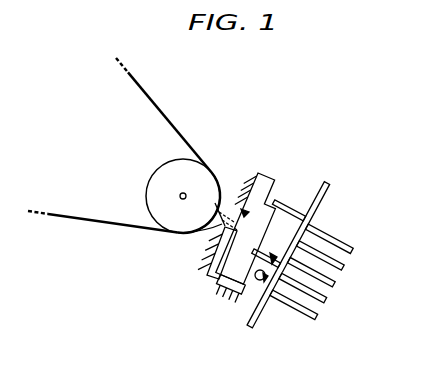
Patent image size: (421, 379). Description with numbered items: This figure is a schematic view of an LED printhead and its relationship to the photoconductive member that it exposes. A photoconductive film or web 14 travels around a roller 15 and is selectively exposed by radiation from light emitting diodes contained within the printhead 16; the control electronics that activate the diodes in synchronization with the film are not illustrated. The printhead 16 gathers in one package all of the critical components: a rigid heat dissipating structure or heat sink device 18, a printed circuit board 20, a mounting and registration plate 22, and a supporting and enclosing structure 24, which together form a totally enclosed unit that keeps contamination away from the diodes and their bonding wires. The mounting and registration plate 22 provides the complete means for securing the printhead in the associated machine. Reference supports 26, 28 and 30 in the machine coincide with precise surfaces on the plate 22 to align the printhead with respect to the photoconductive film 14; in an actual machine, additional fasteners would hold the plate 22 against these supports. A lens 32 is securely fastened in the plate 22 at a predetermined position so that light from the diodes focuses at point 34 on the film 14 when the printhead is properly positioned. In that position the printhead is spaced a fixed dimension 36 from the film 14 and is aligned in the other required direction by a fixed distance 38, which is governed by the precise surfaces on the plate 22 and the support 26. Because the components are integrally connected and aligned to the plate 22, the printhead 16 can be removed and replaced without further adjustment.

The photoconductive film or web 14 is at (176, 130).
The roller 15 is at (140, 176).
The printhead 16 is at (321, 135).
The heat sink device 18 is at (303, 216).
The printed circuit board 20 is at (251, 304).
The mounting and registration plate 22 is at (274, 174).
The supporting and enclosing structure 24 is at (289, 203).
The reference support 26 is at (218, 284).
The reference support 28 is at (205, 274).
The reference support 30 is at (256, 168).
The lens 32 is at (199, 239).
The focus point 34 is at (190, 223).
The fixed dimension 36 is at (215, 171).
The fixed distance 38 is at (242, 276).